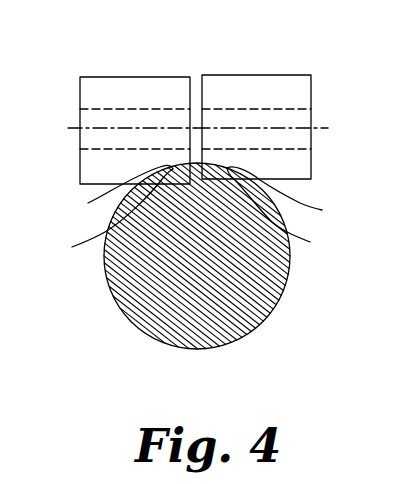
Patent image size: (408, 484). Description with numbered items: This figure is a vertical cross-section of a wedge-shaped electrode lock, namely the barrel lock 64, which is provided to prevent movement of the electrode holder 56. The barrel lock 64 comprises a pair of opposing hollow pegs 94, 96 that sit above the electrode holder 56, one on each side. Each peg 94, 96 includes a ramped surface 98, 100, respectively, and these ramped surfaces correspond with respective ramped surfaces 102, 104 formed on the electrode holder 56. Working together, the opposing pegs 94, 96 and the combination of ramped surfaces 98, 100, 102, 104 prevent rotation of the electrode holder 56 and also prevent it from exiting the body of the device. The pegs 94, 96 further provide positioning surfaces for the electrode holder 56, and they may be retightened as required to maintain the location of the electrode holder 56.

The electrode holder 56 is at (248, 323).
The barrel lock 64 is at (290, 306).
The hollow peg 94 is at (177, 77).
The hollow peg 96 is at (253, 75).
The ramped surface 98 is at (103, 215).
The ramped surface 100 is at (295, 218).
The ramped surface 102 is at (100, 193).
The ramped surface 104 is at (295, 196).